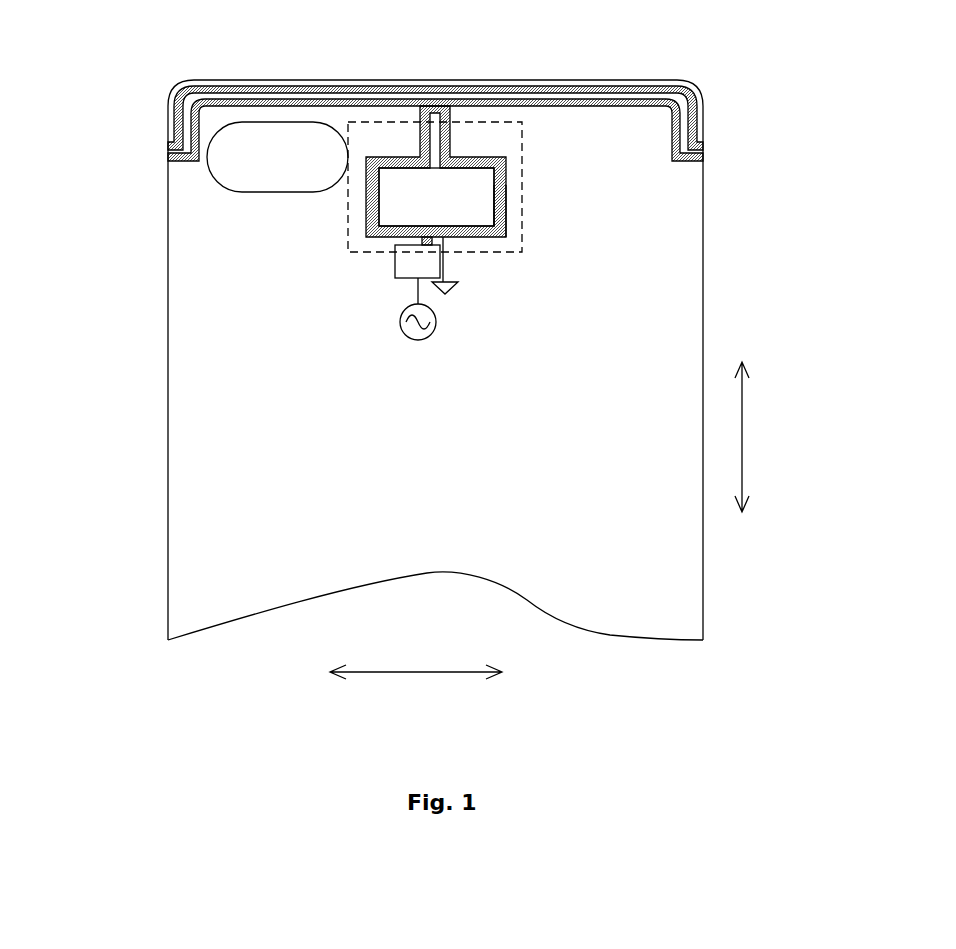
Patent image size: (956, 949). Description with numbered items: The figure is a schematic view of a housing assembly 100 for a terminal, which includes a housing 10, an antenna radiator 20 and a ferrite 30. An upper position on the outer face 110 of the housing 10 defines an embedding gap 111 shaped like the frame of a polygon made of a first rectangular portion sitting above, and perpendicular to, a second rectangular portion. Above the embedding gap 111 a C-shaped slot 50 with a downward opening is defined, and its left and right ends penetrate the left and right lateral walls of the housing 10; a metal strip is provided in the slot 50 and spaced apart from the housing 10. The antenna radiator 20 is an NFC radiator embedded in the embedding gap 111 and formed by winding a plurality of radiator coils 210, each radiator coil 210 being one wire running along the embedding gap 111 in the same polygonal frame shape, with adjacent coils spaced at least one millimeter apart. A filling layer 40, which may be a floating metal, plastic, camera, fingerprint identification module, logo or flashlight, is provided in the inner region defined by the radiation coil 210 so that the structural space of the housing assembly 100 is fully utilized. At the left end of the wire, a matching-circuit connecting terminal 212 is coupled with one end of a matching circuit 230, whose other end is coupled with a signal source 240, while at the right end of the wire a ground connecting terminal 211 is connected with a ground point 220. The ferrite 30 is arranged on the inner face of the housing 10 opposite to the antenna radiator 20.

The housing assembly 100 is at (137, 104).
The housing 10 is at (210, 360).
The outer face 110 is at (640, 345).
The slot 50 is at (256, 93).
The ferrite 30 is at (347, 248).
The antenna radiator 20 is at (372, 158).
The filling layer 40 is at (457, 203).
The embedding gap 111 is at (499, 204).
The radiator coil 210 is at (497, 214).
The matching-circuit connecting terminal 212 is at (421, 242).
The matching circuit 230 is at (395, 280).
The signal source 240 is at (405, 333).
The ground connecting terminal 211 is at (458, 283).
The ground point 220 is at (447, 295).